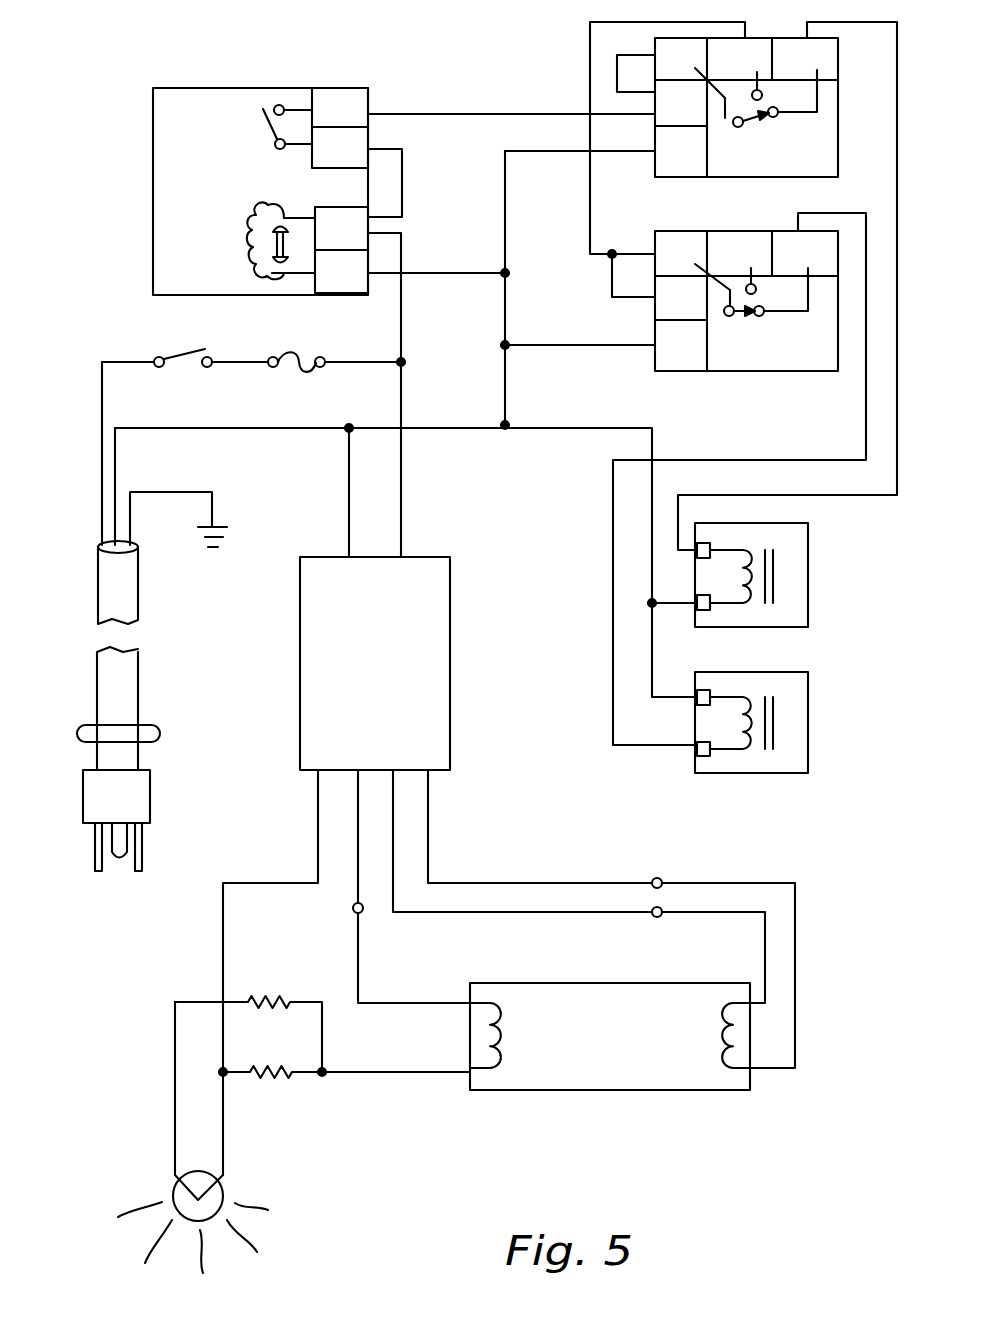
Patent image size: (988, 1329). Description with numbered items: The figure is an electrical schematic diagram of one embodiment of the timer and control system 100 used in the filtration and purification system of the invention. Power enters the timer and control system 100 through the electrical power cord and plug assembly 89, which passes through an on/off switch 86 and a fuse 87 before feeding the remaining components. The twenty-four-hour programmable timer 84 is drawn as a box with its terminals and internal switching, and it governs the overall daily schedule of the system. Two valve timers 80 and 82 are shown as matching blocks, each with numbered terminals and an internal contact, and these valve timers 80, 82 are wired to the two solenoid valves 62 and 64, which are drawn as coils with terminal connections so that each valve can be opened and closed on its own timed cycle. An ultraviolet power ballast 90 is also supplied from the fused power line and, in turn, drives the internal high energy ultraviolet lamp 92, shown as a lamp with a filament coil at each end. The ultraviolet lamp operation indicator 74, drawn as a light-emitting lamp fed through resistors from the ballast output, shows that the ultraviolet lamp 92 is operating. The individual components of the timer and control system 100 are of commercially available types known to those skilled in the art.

The timer and control system 100 is at (120, 183).
The 24-hour programmable timer 84 is at (165, 275).
The on/off switch 86 is at (237, 333).
The fuse 87 is at (312, 323).
The electrical power cord and plug assembly 89 is at (78, 731).
The ultraviolet power ballast 90 is at (428, 740).
The internal high energy ultraviolet lamp 92 is at (688, 1078).
The ultraviolet lamp operation indicator 74 is at (250, 1162).
The valve timer 80 is at (828, 163).
The valve timer 82 is at (828, 346).
The solenoid valve 62 is at (800, 532).
The solenoid valve 64 is at (790, 768).